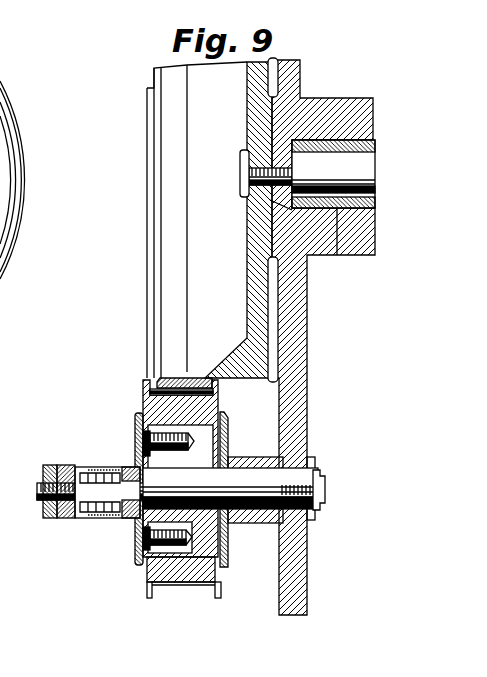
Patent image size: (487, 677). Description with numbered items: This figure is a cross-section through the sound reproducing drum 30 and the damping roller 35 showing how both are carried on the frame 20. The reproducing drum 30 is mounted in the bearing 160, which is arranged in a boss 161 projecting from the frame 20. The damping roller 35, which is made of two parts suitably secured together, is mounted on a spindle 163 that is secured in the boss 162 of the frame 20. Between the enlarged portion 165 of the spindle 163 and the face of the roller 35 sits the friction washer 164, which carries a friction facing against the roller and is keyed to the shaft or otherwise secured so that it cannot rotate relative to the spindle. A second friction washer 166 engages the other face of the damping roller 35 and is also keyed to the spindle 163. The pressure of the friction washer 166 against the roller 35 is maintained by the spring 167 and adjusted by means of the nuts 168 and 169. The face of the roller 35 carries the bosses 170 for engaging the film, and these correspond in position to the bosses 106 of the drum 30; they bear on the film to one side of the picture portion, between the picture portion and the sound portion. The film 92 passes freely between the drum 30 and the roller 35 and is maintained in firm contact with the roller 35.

The frame 20 is at (308, 390).
The sound reproducing drum 30 is at (209, 220).
The damping roller 35 is at (147, 574).
The film 92 is at (158, 390).
The bosses of the drum 106 is at (202, 385).
The bearing 160 is at (337, 255).
The boss 161 is at (373, 253).
The boss 162 is at (255, 457).
The spindle 163 is at (285, 490).
The friction washer 164 is at (228, 422).
The enlarged portion of the spindle 165 is at (177, 488).
The second friction washer 166 is at (143, 536).
The spring 167 is at (95, 467).
The nut 168 is at (45, 467).
The nut 169 is at (62, 465).
The bosses of the roller 170 is at (140, 405).